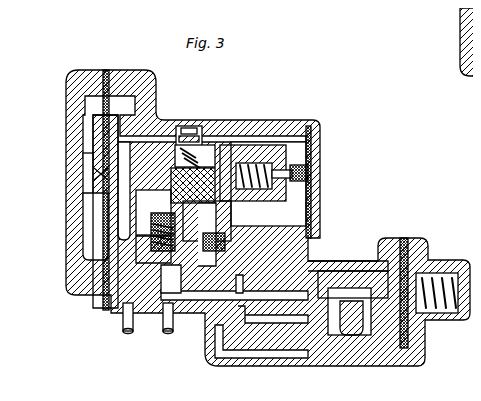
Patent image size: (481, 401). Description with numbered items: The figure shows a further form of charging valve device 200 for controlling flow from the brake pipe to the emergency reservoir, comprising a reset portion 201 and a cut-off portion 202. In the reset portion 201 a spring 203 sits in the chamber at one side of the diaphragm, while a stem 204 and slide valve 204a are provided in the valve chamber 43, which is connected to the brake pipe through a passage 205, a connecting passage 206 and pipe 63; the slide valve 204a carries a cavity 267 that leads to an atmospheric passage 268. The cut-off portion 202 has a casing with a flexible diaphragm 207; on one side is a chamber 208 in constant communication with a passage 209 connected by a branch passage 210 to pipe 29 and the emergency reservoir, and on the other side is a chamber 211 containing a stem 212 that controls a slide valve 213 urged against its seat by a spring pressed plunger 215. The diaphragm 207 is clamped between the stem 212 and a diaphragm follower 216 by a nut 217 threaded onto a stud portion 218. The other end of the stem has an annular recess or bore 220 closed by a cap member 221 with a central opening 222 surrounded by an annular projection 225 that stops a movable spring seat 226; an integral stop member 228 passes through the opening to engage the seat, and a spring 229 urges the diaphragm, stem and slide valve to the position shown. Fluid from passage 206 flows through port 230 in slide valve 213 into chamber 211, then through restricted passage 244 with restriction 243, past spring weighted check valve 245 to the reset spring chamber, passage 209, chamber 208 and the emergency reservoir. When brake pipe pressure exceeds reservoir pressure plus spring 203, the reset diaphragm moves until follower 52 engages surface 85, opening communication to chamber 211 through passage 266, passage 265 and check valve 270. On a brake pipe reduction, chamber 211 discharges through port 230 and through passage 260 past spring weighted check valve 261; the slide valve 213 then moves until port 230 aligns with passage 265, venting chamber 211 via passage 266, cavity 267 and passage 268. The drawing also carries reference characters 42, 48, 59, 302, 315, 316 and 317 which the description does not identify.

The charging valve device 200 is at (152, 70).
The reset portion 201 is at (392, 230).
The cut-off portion 202 is at (110, 70).
The spring 203 is at (464, 245).
The stem 204 is at (350, 262).
The slide valve 204a is at (380, 236).
The passage 205 is at (330, 256).
The connecting passage 206 is at (150, 304).
The flexible diaphragm 207 is at (97, 96).
The chamber 208 is at (78, 232).
The passage 209 is at (82, 263).
The branch passage 210 is at (103, 296).
The chamber 211 is at (162, 112).
The stem 212 is at (205, 150).
The slide valve 213 is at (212, 145).
The spring pressed plunger 215 is at (170, 118).
The diaphragm follower 216 is at (80, 196).
The nut 217 is at (86, 180).
The stud portion 218 is at (90, 165).
The annular recess or bore 220 is at (250, 158).
The cap member 221 is at (302, 120).
The central opening 222 is at (312, 140).
The annular projection 225 is at (300, 168).
The movable spring seat 226 is at (263, 185).
The integral stop member 228 is at (286, 164).
The spring 229 is at (247, 221).
The port 230 is at (193, 185).
The restriction 243 is at (207, 233).
The restricted passage 244 is at (234, 239).
The spring weighted check valve 245 is at (251, 252).
The passage 260 is at (136, 212).
The spring weighted check valve 261 is at (151, 249).
The passage 265 is at (168, 308).
The passage 266 is at (257, 340).
The cavity 267 is at (340, 290).
The atmospheric passage 268 is at (355, 300).
The check valve 270 is at (312, 210).
The pipe 29 is at (115, 318).
The pipe 63 is at (166, 320).
The spring 42 is at (424, 258).
The valve chamber 43 is at (400, 240).
The seat 48 is at (318, 238).
The follower 52 is at (417, 340).
The fitting 59 is at (452, 54).
The surface 85 is at (417, 318).
The passage 302 is at (478, 160).
The passage 315 is at (467, 388).
The passage 316 is at (467, 364).
The passage 317 is at (467, 343).